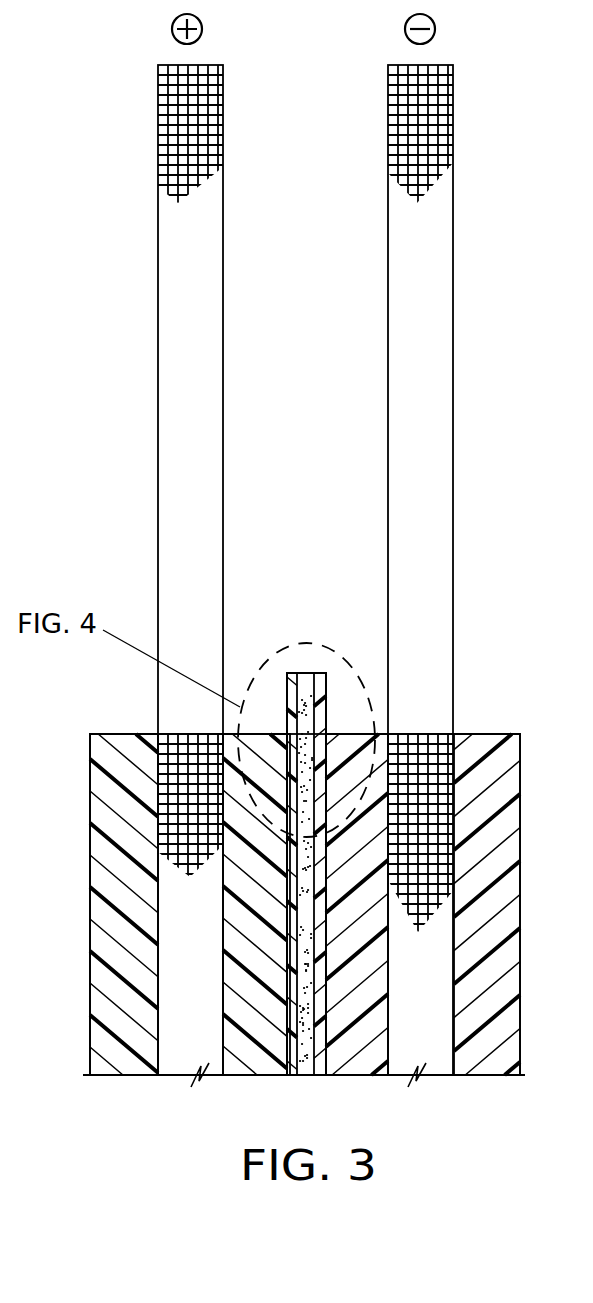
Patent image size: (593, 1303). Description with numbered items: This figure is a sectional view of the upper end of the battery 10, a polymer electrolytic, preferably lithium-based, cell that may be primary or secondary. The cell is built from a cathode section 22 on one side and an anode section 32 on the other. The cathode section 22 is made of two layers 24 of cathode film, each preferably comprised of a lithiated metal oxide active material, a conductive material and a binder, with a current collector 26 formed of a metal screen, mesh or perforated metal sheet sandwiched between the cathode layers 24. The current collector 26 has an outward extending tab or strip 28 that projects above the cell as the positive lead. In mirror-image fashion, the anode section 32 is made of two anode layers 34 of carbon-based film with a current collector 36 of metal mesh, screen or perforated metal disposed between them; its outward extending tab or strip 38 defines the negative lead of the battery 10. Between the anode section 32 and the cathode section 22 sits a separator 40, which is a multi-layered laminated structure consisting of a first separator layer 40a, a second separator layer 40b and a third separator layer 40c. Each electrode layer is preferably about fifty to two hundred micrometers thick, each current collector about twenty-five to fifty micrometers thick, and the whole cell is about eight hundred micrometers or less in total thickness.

The battery 10 is at (70, 490).
The cathode section 22 is at (128, 728).
The cathode layer 24 is at (248, 993).
The current collector 26 is at (180, 908).
The tab or strip 28 is at (170, 237).
The anode section 32 is at (470, 728).
The anode layer 34 is at (493, 1017).
The current collector 36 is at (440, 948).
The tab or strip 38 is at (433, 253).
The separator 40 is at (307, 801).
The first separator layer 40a is at (288, 697).
The second separator layer 40b is at (303, 675).
The third separator layer 40c is at (323, 693).